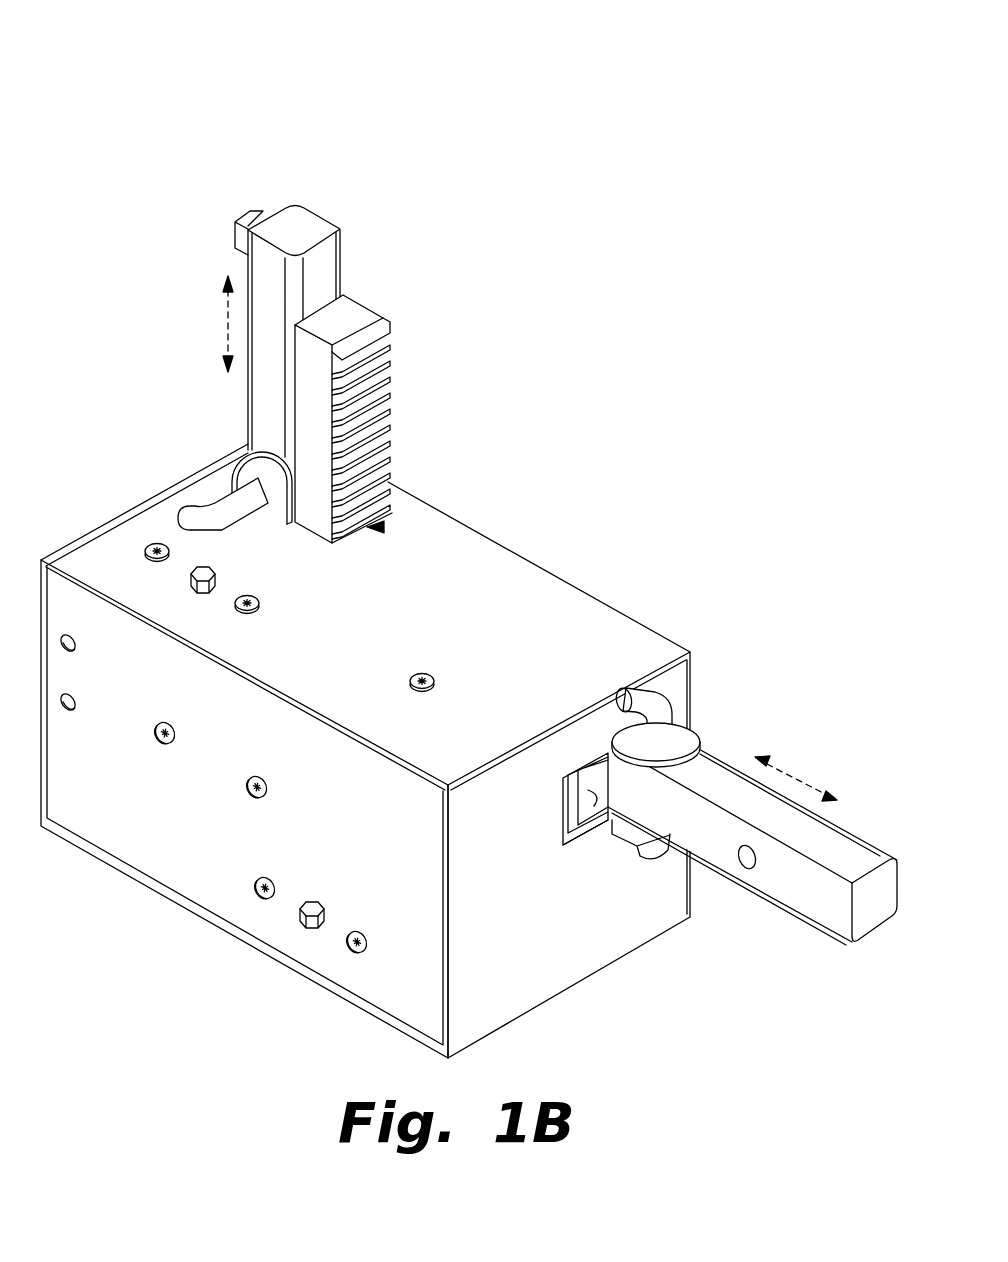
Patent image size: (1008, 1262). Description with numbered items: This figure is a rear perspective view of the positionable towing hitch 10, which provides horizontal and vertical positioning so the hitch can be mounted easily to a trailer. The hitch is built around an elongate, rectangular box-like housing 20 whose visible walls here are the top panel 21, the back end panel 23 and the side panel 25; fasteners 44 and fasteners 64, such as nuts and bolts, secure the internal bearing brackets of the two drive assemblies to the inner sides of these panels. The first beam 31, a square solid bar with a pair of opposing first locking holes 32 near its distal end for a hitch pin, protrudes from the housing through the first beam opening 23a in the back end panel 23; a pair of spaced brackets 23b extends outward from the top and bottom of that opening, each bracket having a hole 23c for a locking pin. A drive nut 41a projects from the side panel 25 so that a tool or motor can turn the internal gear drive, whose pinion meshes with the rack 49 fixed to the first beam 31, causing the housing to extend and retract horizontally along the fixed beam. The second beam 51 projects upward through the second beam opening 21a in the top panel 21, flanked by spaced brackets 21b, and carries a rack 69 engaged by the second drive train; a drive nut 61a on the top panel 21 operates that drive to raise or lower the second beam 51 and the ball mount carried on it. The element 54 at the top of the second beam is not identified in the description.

The positionable towing hitch 10 is at (113, 74).
The housing 20 is at (134, 468).
The top panel 21 is at (368, 641).
The second beam opening 21a is at (387, 527).
The brackets 21b is at (280, 508).
The back end panel 23 is at (528, 893).
The first beam opening 23a is at (583, 832).
The brackets 23b is at (700, 728).
The hole 23c is at (222, 496).
The side panel 25 is at (347, 855).
The first beam 31 is at (843, 857).
The first locking holes 32 is at (740, 861).
The drive nut 41a is at (298, 922).
The fasteners 44 is at (422, 694).
The rack gear 49 is at (600, 808).
The second beam 51 is at (318, 213).
The tab 54 is at (236, 221).
The drive nut 61a is at (198, 568).
The fasteners 64 is at (237, 614).
The rack gear 69 is at (363, 307).